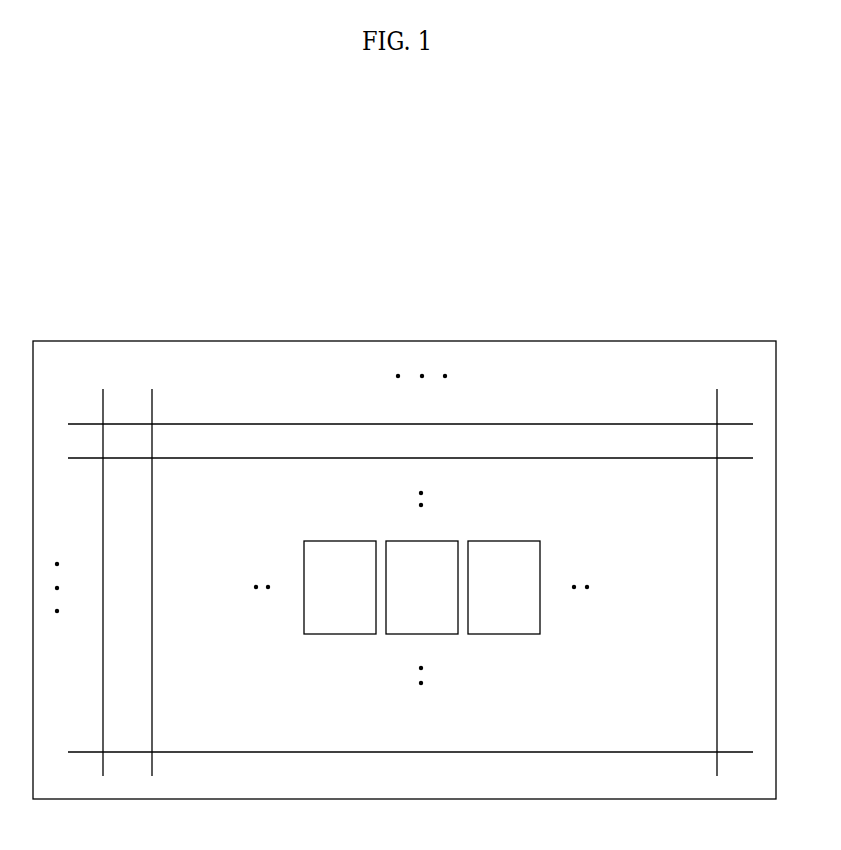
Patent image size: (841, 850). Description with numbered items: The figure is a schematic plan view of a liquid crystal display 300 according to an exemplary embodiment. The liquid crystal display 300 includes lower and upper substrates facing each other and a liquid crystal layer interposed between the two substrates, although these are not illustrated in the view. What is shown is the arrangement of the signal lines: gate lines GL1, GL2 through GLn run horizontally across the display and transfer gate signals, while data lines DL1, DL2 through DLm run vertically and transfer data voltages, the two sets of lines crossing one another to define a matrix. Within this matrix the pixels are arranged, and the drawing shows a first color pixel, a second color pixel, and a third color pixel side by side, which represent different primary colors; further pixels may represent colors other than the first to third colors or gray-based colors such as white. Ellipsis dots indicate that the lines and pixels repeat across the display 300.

The liquid crystal display 300 is at (518, 341).
The data line DL1 is at (102, 567).
The data line DL2 is at (149, 567).
The data line DLm is at (713, 566).
The gate line GL1 is at (397, 410).
The gate line GL2 is at (397, 445).
The gate line GLn is at (396, 740).